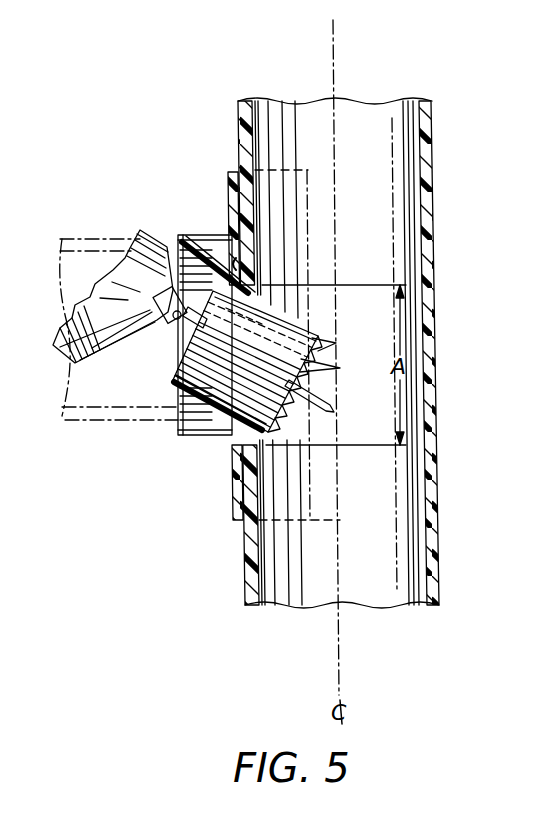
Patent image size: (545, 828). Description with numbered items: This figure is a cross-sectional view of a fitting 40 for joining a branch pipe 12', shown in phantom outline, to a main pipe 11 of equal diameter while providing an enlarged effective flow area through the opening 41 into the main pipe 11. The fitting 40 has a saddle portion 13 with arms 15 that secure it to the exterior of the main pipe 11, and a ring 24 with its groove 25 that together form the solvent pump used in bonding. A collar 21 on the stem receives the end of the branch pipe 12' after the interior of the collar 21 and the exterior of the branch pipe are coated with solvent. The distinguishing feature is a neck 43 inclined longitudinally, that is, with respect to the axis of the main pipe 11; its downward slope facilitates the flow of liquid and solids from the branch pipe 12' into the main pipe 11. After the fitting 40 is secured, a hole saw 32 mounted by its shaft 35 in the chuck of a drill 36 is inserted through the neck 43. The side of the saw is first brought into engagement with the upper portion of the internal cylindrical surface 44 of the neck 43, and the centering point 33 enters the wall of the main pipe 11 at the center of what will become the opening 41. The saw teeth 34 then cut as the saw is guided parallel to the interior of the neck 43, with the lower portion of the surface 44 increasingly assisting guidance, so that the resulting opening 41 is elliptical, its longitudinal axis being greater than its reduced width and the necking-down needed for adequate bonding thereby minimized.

The main pipe 11 is at (432, 180).
The branch pipe 12' is at (111, 362).
The saddle portion 13 is at (232, 200).
The arms 15 is at (321, 215).
The collar 21 is at (185, 235).
The ring 24 is at (241, 258).
The groove 25 is at (246, 234).
The hole saw 32 is at (307, 342).
The centering point 33 is at (331, 412).
The saw teeth 34 is at (311, 370).
The shaft 35 is at (201, 330).
The drill 36 is at (152, 230).
The fitting 40 is at (218, 506).
The opening 41 is at (290, 300).
The neck 43 is at (216, 442).
The internal cylindrical surface 44 is at (200, 434).